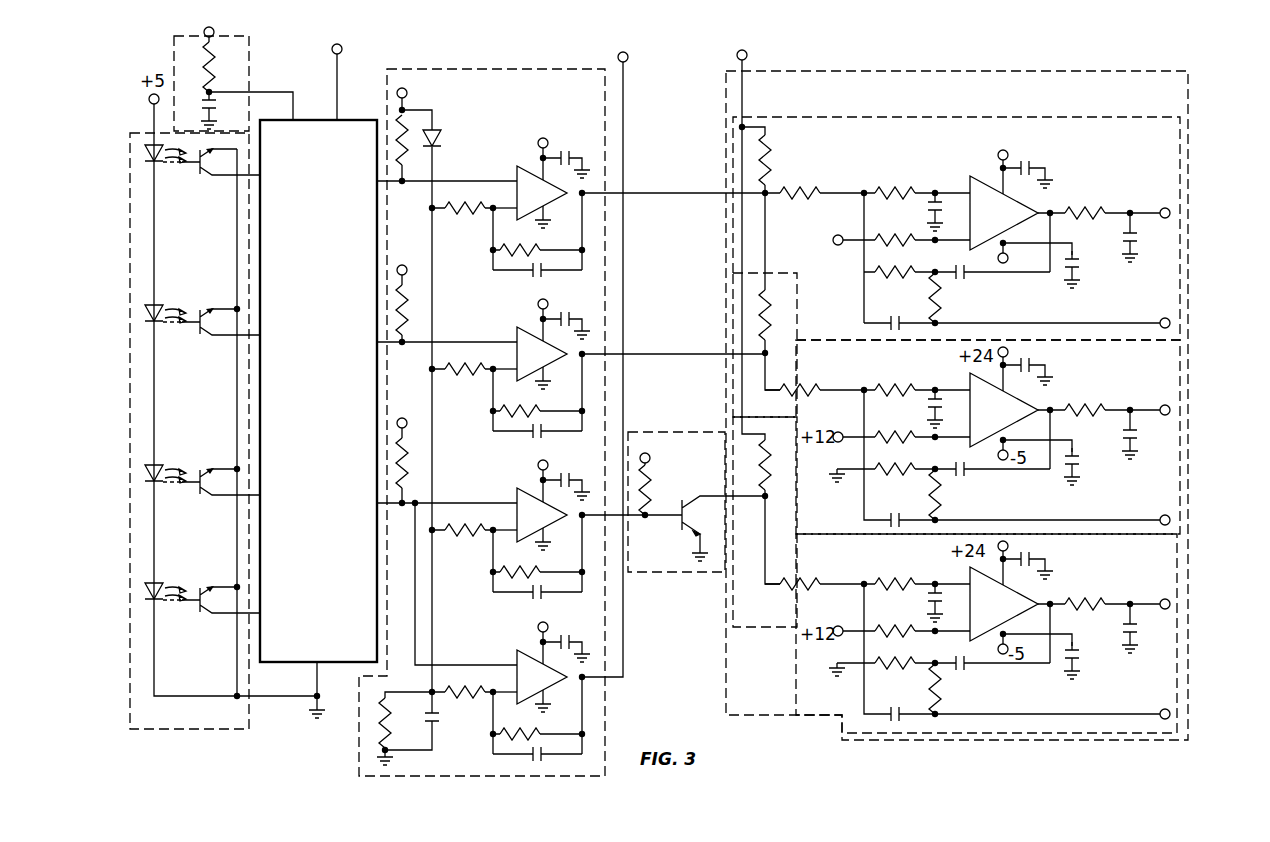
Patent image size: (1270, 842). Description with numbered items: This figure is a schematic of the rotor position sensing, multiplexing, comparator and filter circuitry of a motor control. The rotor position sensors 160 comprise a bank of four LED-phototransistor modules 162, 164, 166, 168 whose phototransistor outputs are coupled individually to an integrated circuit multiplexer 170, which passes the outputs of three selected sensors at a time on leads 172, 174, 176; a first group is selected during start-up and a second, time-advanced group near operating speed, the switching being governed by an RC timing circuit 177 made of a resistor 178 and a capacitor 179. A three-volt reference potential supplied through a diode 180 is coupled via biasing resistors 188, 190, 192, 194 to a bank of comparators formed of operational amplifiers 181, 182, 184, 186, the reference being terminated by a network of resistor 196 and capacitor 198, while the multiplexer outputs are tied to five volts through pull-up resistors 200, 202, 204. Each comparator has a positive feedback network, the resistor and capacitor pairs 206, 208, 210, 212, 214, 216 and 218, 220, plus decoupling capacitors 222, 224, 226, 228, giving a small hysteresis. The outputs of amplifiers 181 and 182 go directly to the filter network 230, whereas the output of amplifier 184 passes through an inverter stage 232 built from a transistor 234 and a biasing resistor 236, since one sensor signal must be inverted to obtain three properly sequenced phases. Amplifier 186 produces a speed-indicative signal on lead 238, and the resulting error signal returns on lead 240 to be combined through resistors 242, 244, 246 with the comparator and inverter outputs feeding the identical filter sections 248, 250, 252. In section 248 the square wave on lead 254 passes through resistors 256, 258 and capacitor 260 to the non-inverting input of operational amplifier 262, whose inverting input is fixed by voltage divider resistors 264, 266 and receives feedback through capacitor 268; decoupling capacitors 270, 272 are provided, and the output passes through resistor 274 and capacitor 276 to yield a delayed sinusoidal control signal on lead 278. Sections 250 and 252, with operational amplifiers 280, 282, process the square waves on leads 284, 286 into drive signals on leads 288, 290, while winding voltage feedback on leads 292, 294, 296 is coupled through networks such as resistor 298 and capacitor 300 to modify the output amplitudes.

The rotor position sensors 160 is at (183, 731).
The LED-phototransistor module 162 is at (200, 175).
The LED-phototransistor module 164 is at (202, 340).
The LED-phototransistor module 166 is at (200, 500).
The LED-phototransistor module 168 is at (195, 618).
The multiplexer 170 is at (334, 473).
The lead 172 is at (413, 186).
The lead 174 is at (413, 348).
The lead 176 is at (449, 500).
The RC timing circuit 177 is at (250, 48).
The resistor 178 is at (226, 59).
The capacitor 179 is at (215, 102).
The diode 180 is at (438, 137).
The operational amplifier 181 is at (523, 170).
The operational amplifier 182 is at (517, 338).
The operational amplifier 184 is at (522, 500).
The operational amplifier 186 is at (510, 658).
The biasing resistor 188 is at (464, 223).
The biasing resistor 190 is at (464, 389).
The biasing resistor 192 is at (464, 549).
The biasing resistor 194 is at (464, 708).
The resistor 196 is at (377, 738).
The capacitor 198 is at (427, 725).
The pull-up resistor 200 is at (394, 136).
The pull-up resistor 202 is at (408, 310).
The pull-up resistor 204 is at (410, 464).
The positive feedback resistor 206 is at (542, 247).
The positive feedback capacitor 208 is at (526, 273).
The positive feedback resistor 210 is at (533, 417).
The positive feedback capacitor 212 is at (526, 435).
The positive feedback resistor 214 is at (533, 577).
The positive feedback capacitor 216 is at (521, 596).
The positive feedback resistor 218 is at (533, 737).
The positive feedback capacitor 220 is at (542, 756).
The decoupling capacitor 222 is at (561, 147).
The decoupling capacitor 224 is at (564, 310).
The decoupling capacitor 226 is at (567, 471).
The decoupling capacitor 228 is at (568, 634).
The filter network 230 is at (892, 70).
The inverter stage 232 is at (668, 432).
The transistor 234 is at (688, 498).
The biasing resistor 236 is at (651, 474).
The lead 238 is at (623, 105).
The lead 240 is at (745, 93).
The resistor 242 is at (770, 165).
The resistor 244 is at (770, 288).
The resistor 246 is at (778, 470).
The filter section 248 is at (1183, 147).
The filter section 250 is at (1183, 385).
The filter section 252 is at (1180, 575).
The lead 254 is at (680, 192).
The resistor 256 is at (795, 192).
The resistor 258 is at (915, 177).
The capacitor 260 is at (930, 214).
The operational amplifier 262 is at (978, 190).
The voltage divider resistor 264 is at (886, 248).
The voltage divider resistor 266 is at (906, 258).
The capacitor 268 is at (962, 283).
The decoupling capacitor 270 is at (1030, 168).
The decoupling capacitor 272 is at (1078, 270).
The resistor 274 is at (1099, 201).
The capacitor 276 is at (1122, 242).
The lead 278 is at (1163, 208).
The operational amplifier 280 is at (968, 384).
The operational amplifier 282 is at (968, 576).
The lead 284 is at (773, 369).
The lead 286 is at (767, 564).
The lead 288 is at (1163, 405).
The lead 290 is at (1148, 603).
The lead 292 is at (1160, 322).
The lead 294 is at (1160, 522).
The lead 296 is at (1133, 717).
The resistor 298 is at (940, 310).
The capacitor 300 is at (890, 323).